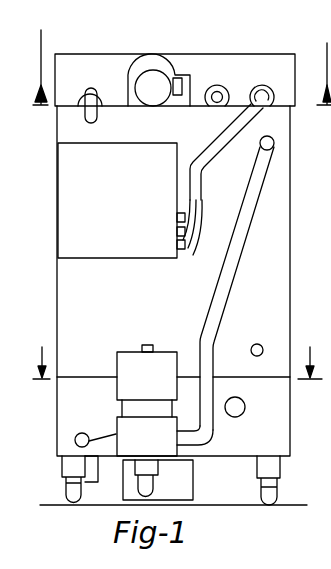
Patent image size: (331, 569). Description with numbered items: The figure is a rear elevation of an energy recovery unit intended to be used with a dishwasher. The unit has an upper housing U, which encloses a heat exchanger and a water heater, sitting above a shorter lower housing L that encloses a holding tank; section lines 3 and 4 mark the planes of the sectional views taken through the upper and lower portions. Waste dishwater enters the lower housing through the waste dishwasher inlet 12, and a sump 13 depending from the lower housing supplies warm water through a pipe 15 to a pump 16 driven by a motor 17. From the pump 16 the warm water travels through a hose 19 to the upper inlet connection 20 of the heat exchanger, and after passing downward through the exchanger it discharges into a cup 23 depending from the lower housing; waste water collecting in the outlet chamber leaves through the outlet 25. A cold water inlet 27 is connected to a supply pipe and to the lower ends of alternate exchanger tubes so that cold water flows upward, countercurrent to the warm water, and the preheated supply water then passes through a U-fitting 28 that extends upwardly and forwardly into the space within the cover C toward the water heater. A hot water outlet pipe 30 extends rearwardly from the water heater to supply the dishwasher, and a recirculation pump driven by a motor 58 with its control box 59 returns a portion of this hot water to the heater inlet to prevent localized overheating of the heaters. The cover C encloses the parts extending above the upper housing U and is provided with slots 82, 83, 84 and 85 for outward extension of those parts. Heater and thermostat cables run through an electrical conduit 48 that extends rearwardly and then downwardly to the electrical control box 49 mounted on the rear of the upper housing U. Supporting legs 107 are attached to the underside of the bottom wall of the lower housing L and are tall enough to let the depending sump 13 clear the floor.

The section line 3- 3 is at (182, 58).
The section line 4- 4 is at (177, 352).
The cover C is at (205, 50).
The upper housing U is at (295, 190).
The lower housing L is at (294, 436).
The waste dishwasher inlet 12 is at (245, 403).
The sump 13 is at (193, 481).
The pipe 15 is at (153, 480).
The pump 16 is at (117, 427).
The motor 17 is at (117, 360).
The hose 19 is at (232, 282).
The upper inlet connection 20 is at (270, 142).
The cup 23 is at (100, 465).
The outlet 25 is at (113, 438).
The cold water inlet 27 is at (257, 344).
The U-fitting 28 is at (97, 120).
The hot water outlet pipe 30 is at (223, 106).
The electrical conduit 48 is at (227, 148).
The electrical control box 49 is at (125, 210).
The motor 58 is at (153, 78).
The control box 59 is at (180, 82).
The slot 82 is at (107, 83).
The slot 83 is at (128, 83).
The slot 84 is at (233, 78).
The slot 85 is at (277, 76).
The supporting legs 107 is at (66, 478).